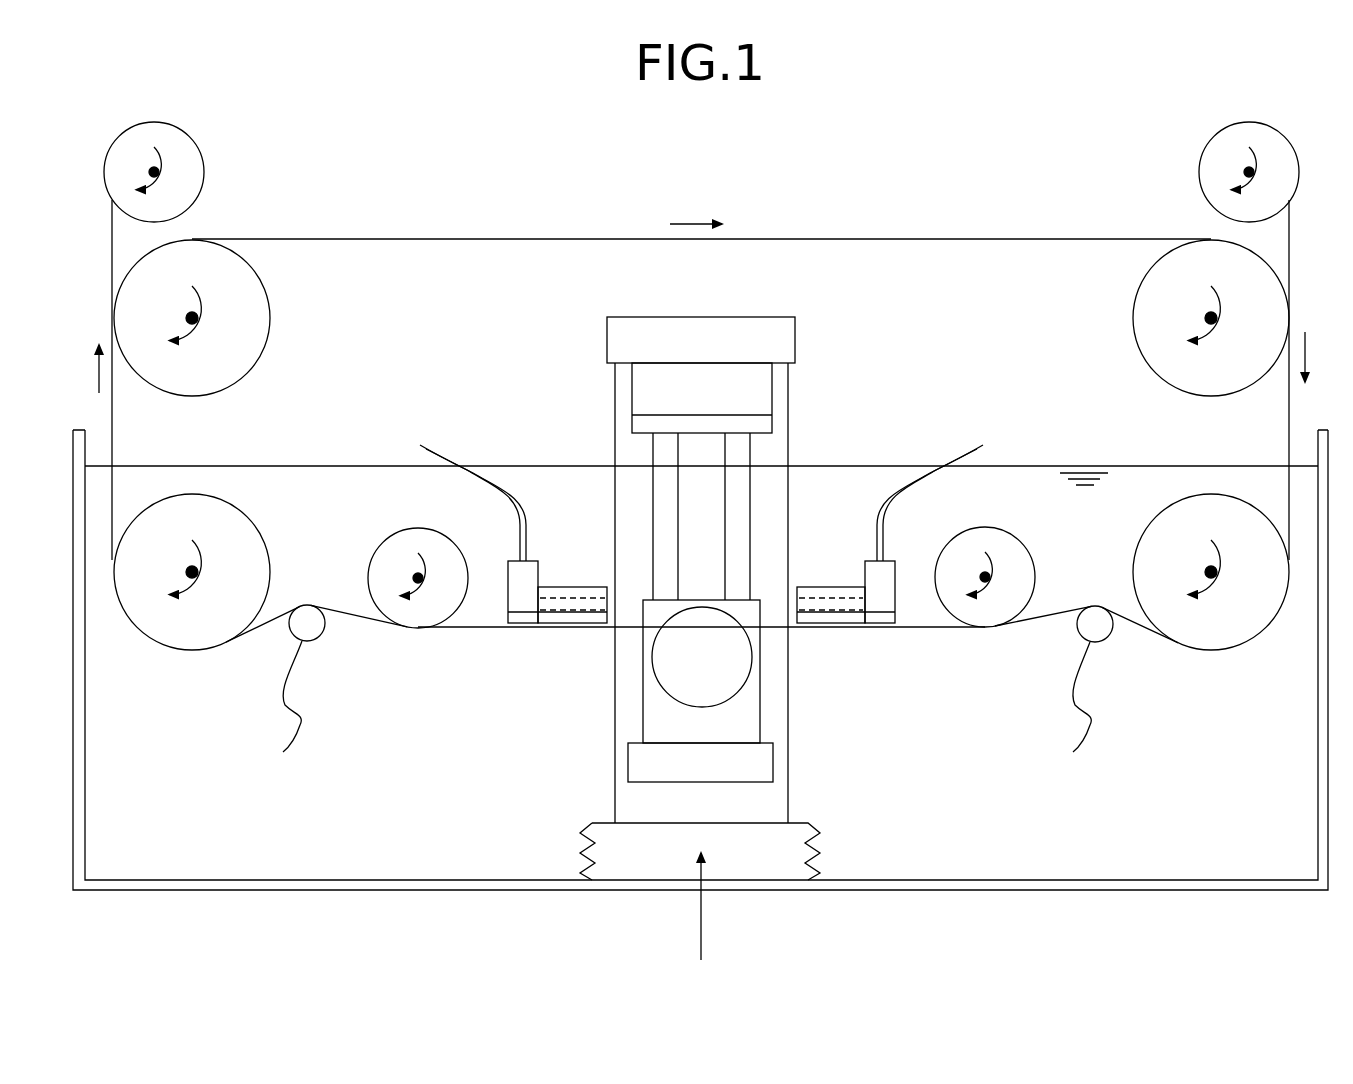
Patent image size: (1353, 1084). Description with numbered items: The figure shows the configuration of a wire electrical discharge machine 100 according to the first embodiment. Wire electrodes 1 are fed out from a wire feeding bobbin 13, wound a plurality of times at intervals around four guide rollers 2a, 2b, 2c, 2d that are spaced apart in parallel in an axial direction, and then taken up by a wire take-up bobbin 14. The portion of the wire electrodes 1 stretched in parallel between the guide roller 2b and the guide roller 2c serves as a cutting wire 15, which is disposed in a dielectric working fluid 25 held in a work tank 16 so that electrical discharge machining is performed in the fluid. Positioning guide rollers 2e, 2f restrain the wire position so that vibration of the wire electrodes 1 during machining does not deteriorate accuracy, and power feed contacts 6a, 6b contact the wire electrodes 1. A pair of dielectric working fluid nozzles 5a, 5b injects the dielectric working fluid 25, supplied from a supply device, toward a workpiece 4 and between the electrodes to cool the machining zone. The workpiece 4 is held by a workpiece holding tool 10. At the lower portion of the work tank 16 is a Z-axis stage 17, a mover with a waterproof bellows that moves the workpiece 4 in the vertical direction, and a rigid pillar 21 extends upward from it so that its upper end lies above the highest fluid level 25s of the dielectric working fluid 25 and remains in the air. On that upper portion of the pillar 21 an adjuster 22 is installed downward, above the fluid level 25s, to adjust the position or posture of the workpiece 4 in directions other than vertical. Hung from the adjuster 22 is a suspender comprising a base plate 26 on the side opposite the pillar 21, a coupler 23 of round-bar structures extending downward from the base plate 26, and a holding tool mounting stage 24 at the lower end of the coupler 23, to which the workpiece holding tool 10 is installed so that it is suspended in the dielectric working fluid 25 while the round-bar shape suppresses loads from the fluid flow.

The wire electrical discharge machine 100 is at (908, 173).
The wire electrode 1 is at (553, 238).
The wire feeding bobbin 13 is at (1198, 172).
The wire take-up bobbin 14 is at (205, 172).
The guide roller 2a is at (1133, 316).
The guide roller 2b is at (1133, 570).
The guide roller 2c is at (271, 570).
The guide roller 2d is at (271, 316).
The positioning guide roller 2e is at (985, 527).
The positioning guide roller 2f is at (418, 528).
The workpiece 4 is at (688, 701).
The dielectric working fluid nozzle 5a is at (830, 587).
The dielectric working fluid nozzle 5b is at (573, 587).
The power feed contact 6a is at (1113, 629).
The power feed contact 6b is at (325, 628).
The workpiece holding tool 10 is at (750, 690).
The cutting wire 15 is at (630, 628).
The work tank 16 is at (190, 891).
The Z-axis stage 17 is at (788, 871).
The pillar 21 is at (628, 490).
The adjuster 22 is at (758, 397).
The coupler 23 is at (780, 491).
The holding tool mounting stage 24 is at (775, 762).
The dielectric working fluid 25 is at (1285, 891).
The fluid level 25s is at (1126, 465).
The base plate 26 is at (632, 423).